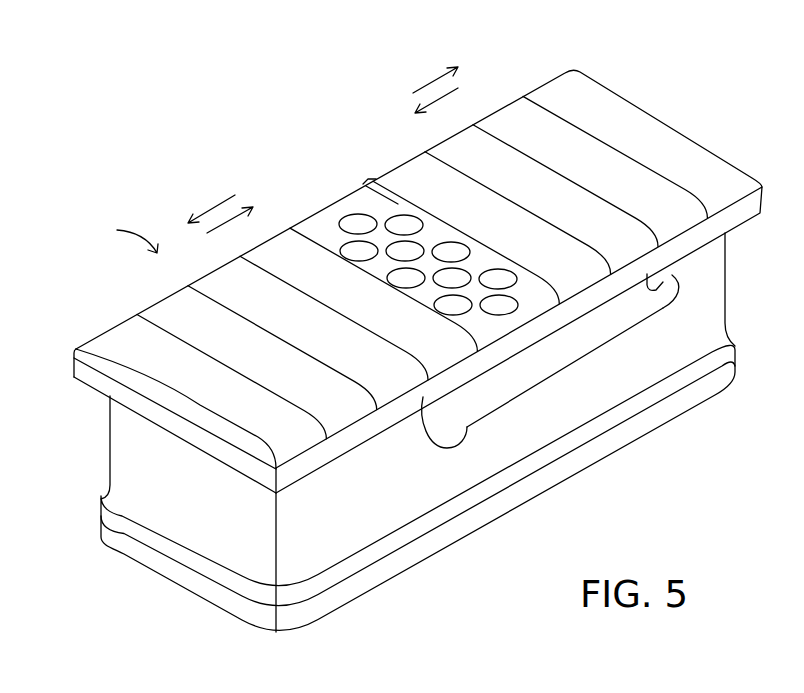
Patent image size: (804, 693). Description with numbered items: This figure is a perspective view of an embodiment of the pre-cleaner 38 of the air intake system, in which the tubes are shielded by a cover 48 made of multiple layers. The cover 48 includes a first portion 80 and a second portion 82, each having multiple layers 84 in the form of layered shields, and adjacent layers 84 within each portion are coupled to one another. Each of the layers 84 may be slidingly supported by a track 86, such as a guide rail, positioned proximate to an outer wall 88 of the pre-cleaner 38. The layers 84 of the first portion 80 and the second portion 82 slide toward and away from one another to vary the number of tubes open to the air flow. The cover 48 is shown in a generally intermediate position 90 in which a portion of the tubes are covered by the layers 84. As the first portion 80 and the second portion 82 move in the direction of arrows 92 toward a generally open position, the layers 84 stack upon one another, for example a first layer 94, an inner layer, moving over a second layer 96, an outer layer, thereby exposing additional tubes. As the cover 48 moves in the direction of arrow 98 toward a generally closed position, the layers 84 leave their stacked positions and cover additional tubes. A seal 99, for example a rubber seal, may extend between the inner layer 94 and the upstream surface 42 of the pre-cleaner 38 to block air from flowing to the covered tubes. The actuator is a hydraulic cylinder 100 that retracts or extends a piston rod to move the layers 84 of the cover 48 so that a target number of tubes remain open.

The pre-cleaner 38 is at (710, 43).
The upstream surface 42 is at (310, 220).
The cover 48 is at (343, 250).
The first portion 80 is at (78, 350).
The second portion 82 is at (625, 89).
The layers 84 is at (163, 313).
The track 86 is at (745, 218).
The outer wall 88 is at (328, 550).
The intermediate position 90 is at (120, 233).
The arrows 92 is at (420, 83).
The first layer 94 is at (408, 177).
The second layer 96 is at (575, 80).
The arrow 98 is at (453, 93).
The seal 99 is at (368, 188).
The hydraulic cylinder 100 is at (505, 408).